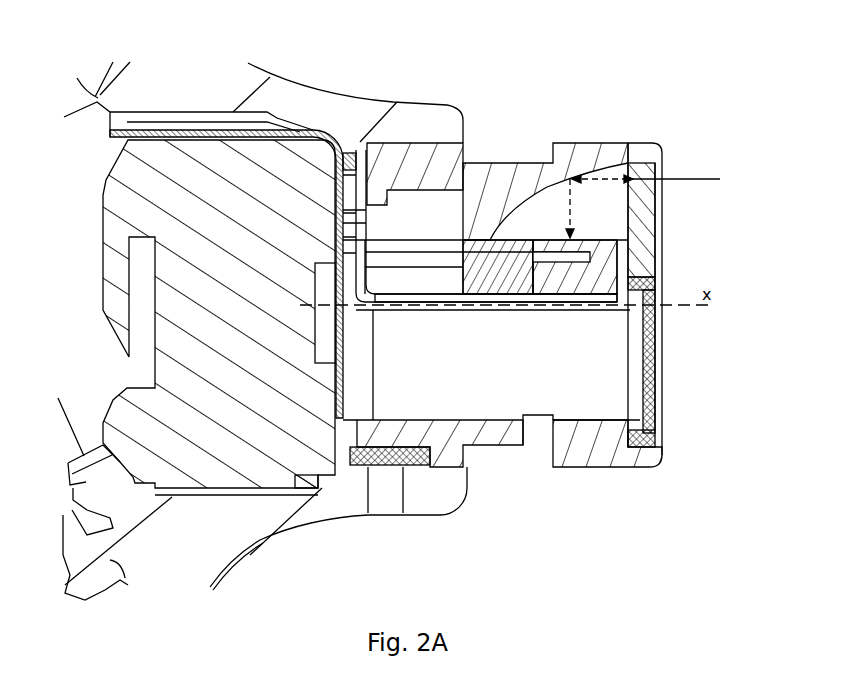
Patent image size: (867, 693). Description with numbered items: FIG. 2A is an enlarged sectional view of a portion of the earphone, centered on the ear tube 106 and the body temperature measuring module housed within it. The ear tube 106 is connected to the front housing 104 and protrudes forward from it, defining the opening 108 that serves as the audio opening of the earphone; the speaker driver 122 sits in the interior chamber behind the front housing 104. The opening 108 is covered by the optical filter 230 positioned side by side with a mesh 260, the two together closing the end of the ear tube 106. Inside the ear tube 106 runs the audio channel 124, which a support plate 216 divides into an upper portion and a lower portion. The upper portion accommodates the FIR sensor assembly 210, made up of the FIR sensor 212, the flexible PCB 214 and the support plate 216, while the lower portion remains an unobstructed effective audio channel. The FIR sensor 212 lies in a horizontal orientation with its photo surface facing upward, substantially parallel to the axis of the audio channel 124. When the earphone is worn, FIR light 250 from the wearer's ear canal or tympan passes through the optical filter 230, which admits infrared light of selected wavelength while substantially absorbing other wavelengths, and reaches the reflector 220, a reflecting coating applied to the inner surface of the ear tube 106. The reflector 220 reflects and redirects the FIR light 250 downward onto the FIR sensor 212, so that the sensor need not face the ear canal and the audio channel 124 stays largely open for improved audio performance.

The front housing 104 is at (313, 113).
The ear tube 106 is at (483, 440).
The opening 108 is at (657, 230).
The speaker driver 122 is at (248, 468).
The audio channel 124 is at (567, 397).
The FIR sensor assembly 210 is at (497, 280).
The FIR sensor 212 is at (537, 287).
The flexible PCB 214 is at (513, 297).
The support plate 216 is at (383, 308).
The reflector 220 is at (597, 173).
The optical filter 230 is at (635, 240).
The FIR light 250 is at (675, 179).
The mesh 260 is at (648, 398).